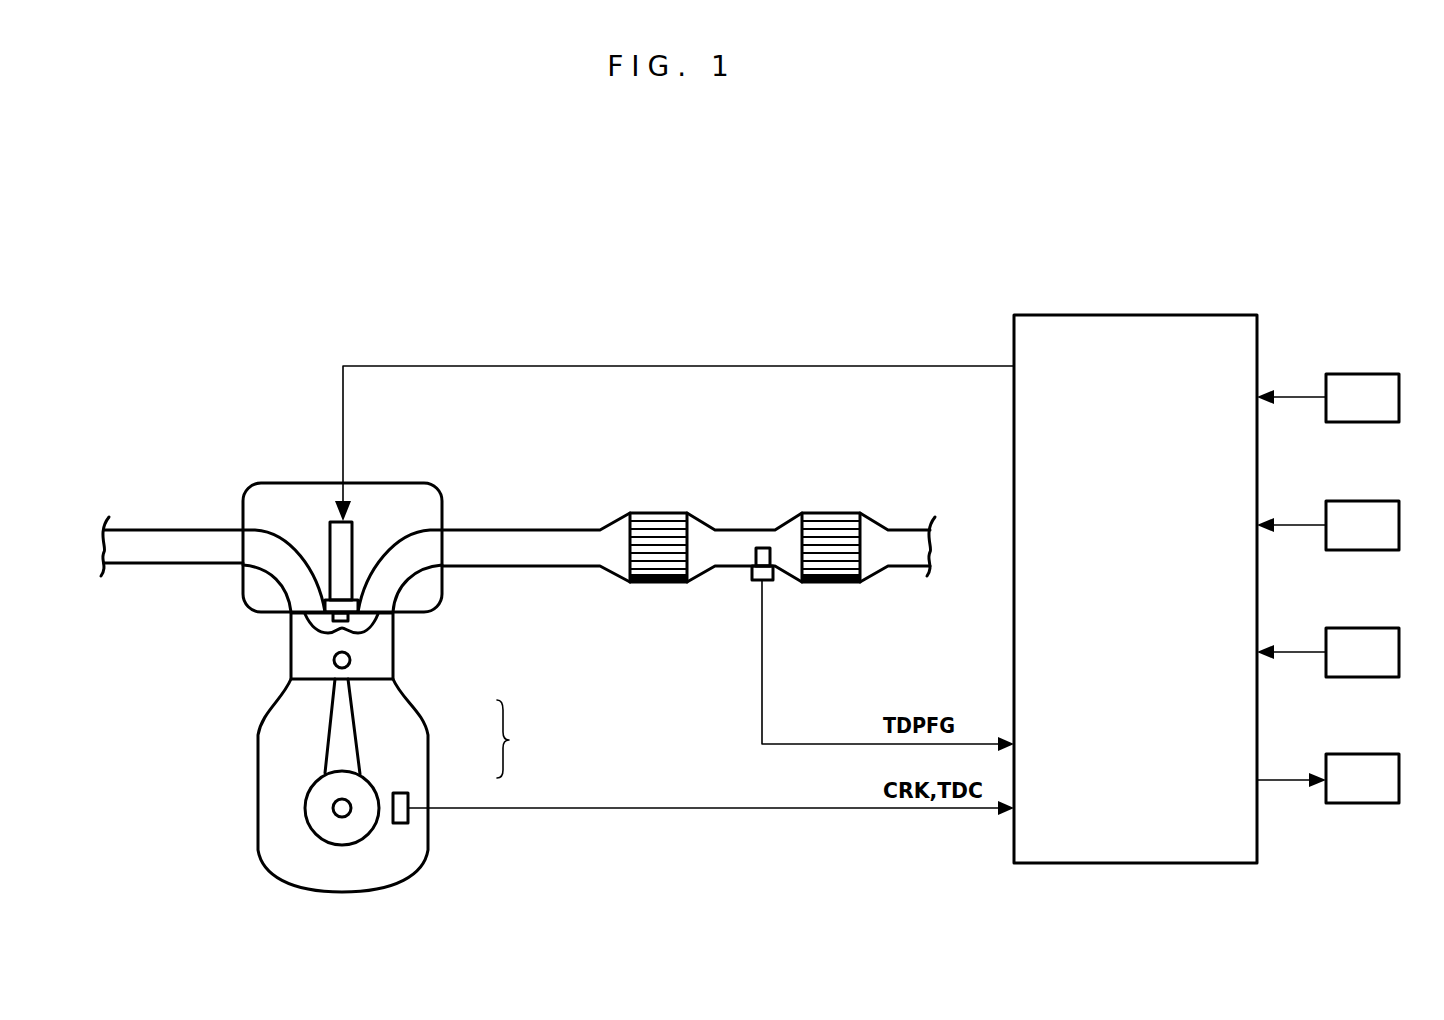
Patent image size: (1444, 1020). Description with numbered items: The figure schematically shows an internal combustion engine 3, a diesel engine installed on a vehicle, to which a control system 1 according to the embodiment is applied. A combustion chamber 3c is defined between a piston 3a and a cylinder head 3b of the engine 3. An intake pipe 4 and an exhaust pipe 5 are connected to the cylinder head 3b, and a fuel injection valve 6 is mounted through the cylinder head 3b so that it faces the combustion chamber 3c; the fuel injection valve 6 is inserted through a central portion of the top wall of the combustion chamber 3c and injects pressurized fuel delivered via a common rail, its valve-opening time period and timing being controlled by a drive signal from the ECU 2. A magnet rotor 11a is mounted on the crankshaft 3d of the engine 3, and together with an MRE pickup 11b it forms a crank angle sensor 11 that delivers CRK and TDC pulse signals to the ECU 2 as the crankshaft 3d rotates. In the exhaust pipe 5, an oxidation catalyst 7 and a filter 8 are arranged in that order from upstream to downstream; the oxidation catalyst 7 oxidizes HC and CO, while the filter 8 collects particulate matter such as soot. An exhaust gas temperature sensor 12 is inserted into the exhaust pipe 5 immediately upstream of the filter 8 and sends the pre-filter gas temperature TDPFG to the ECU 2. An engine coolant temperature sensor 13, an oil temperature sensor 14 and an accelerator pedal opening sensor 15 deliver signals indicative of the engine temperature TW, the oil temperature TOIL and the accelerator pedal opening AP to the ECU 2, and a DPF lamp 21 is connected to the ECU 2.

The control system 1 is at (1198, 172).
The ECU 2 is at (1143, 864).
The internal combustion engine 3 is at (250, 859).
The piston 3a is at (312, 656).
The cylinder head 3b is at (302, 496).
The combustion chamber 3c is at (365, 622).
The crankshaft 3d is at (345, 815).
The intake pipe 4 is at (138, 564).
The exhaust pipe 5 is at (532, 568).
The fuel injection valve 6 is at (353, 524).
The oxidation catalyst 7 is at (652, 584).
The filter 8 is at (832, 584).
The crank angle sensor 11 is at (517, 739).
The magnet rotor 11a is at (365, 780).
The MRE pickup 11b is at (402, 793).
The exhaust gas temperature sensor 12 is at (755, 582).
The engine coolant temperature sensor 13 is at (1377, 374).
The oil temperature sensor 14 is at (1377, 501).
The accelerator pedal opening sensor 15 is at (1377, 628).
The DPF lamp 21 is at (1377, 754).